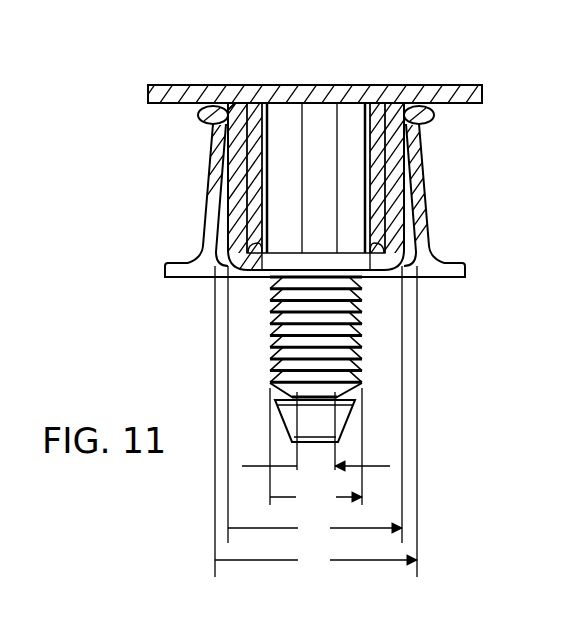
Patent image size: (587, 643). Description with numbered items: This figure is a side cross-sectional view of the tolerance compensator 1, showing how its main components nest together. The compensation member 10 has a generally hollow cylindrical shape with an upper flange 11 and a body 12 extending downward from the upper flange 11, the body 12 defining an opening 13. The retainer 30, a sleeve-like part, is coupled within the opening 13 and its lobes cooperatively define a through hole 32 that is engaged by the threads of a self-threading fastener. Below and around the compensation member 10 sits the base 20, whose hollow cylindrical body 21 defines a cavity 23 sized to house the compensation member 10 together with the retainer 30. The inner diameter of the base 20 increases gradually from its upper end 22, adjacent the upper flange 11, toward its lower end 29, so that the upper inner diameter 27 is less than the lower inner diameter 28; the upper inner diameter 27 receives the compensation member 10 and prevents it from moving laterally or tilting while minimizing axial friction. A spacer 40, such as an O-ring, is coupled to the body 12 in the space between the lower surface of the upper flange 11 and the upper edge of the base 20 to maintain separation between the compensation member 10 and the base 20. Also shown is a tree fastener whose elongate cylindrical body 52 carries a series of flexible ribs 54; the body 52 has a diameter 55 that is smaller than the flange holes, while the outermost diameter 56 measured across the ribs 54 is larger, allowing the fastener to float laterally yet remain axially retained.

The tolerance compensator 1 is at (118, 60).
The compensation member 10 is at (483, 93).
The upper flange 11 is at (168, 85).
The body 12 is at (240, 190).
The opening 13 is at (247, 103).
The base 20 is at (200, 258).
The hollow cylindrical body 21 is at (208, 217).
The upper end 22 is at (418, 125).
The cavity 23 is at (410, 214).
The upper inner diameter 27 is at (315, 404).
The lower inner diameter 28 is at (316, 421).
The lower end 29 is at (457, 272).
The retainer 30 is at (258, 135).
The through hole 32 is at (349, 130).
The spacer 40 is at (199, 121).
The body 52 is at (290, 405).
The flexible ribs 54 is at (275, 283).
The diameter 55 is at (370, 466).
The outermost diameter 56 is at (316, 449).